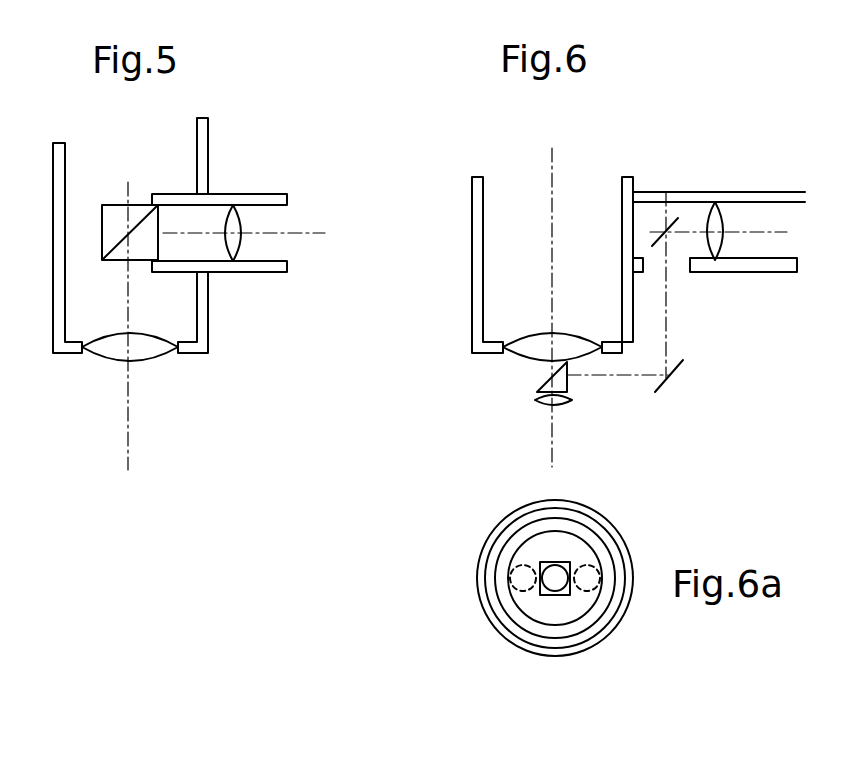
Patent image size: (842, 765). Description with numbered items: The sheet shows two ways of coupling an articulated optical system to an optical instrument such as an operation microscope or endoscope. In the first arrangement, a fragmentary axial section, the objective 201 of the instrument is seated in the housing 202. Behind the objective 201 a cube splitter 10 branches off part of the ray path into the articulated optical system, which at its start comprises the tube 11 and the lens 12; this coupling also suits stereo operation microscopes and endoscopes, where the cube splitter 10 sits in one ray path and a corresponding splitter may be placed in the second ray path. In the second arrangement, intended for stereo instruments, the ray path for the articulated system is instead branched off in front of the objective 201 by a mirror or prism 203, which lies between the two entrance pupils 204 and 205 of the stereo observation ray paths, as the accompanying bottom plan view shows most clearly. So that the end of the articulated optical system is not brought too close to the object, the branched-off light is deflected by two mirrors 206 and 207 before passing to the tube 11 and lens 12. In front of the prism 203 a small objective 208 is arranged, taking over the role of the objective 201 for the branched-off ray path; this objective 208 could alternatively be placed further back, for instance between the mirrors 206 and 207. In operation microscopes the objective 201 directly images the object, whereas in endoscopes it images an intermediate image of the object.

In FIG. 5, the cube splitter 10 is at (116, 212).
In FIG. 5, the tube 11 is at (223, 198).
In FIG. 6, the tube 11 is at (748, 199).
In FIG. 5, the lens 12 is at (237, 207).
In FIG. 6, the lens 12 is at (716, 250).
In FIG. 5, the objective 201 is at (157, 348).
In FIG. 6, the objective 201 is at (527, 347).
In FIG. 6A, the objective 201 is at (532, 550).
In FIG. 5, the housing 202 is at (203, 313).
In FIG. 6, the housing 202 is at (477, 303).
In FIG. 6A, the housing 202 is at (480, 558).
In FIG. 6, the mirror or prism 203 is at (545, 380).
In FIG. 6A, the mirror or prism 203 is at (547, 552).
In FIG. 6A, the entrance pupil 204 is at (525, 593).
In FIG. 6A, the entrance pupil 205 is at (588, 595).
In FIG. 6, the mirror 206 is at (668, 378).
In FIG. 6, the mirror 207 is at (662, 237).
In FIG. 6, the objective 208 is at (568, 400).
In FIG. 6A, the objective 208 is at (557, 585).